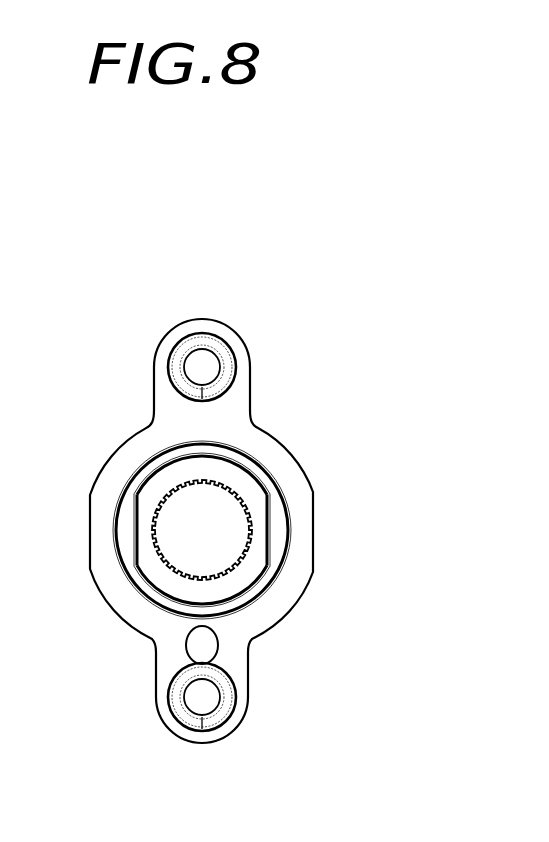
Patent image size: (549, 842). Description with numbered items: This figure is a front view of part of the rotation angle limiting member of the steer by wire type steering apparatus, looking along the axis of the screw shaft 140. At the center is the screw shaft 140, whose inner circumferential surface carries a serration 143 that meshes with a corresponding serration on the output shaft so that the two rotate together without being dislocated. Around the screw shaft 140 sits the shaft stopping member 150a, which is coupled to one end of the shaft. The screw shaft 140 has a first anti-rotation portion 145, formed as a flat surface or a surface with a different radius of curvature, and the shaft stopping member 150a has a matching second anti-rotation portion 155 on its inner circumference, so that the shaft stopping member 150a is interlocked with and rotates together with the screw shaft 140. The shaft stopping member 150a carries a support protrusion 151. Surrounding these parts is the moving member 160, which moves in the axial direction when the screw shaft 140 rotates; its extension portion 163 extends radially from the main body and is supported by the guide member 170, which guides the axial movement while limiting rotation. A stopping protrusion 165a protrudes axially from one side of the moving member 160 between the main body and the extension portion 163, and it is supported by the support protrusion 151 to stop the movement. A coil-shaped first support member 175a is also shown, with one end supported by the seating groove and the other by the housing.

The screw shaft 140 is at (170, 480).
The serration 143 is at (204, 489).
The first anti-rotation portion 145 is at (258, 528).
The shaft stopping member 150a is at (118, 525).
The support protrusion 151 is at (147, 630).
The second anti-rotation portion 155 is at (276, 554).
The moving member 160 is at (305, 542).
The extension portion 163 is at (200, 320).
The stopping protrusion 165a is at (207, 648).
The guide member 170 is at (210, 368).
The first support member 175a is at (177, 345).